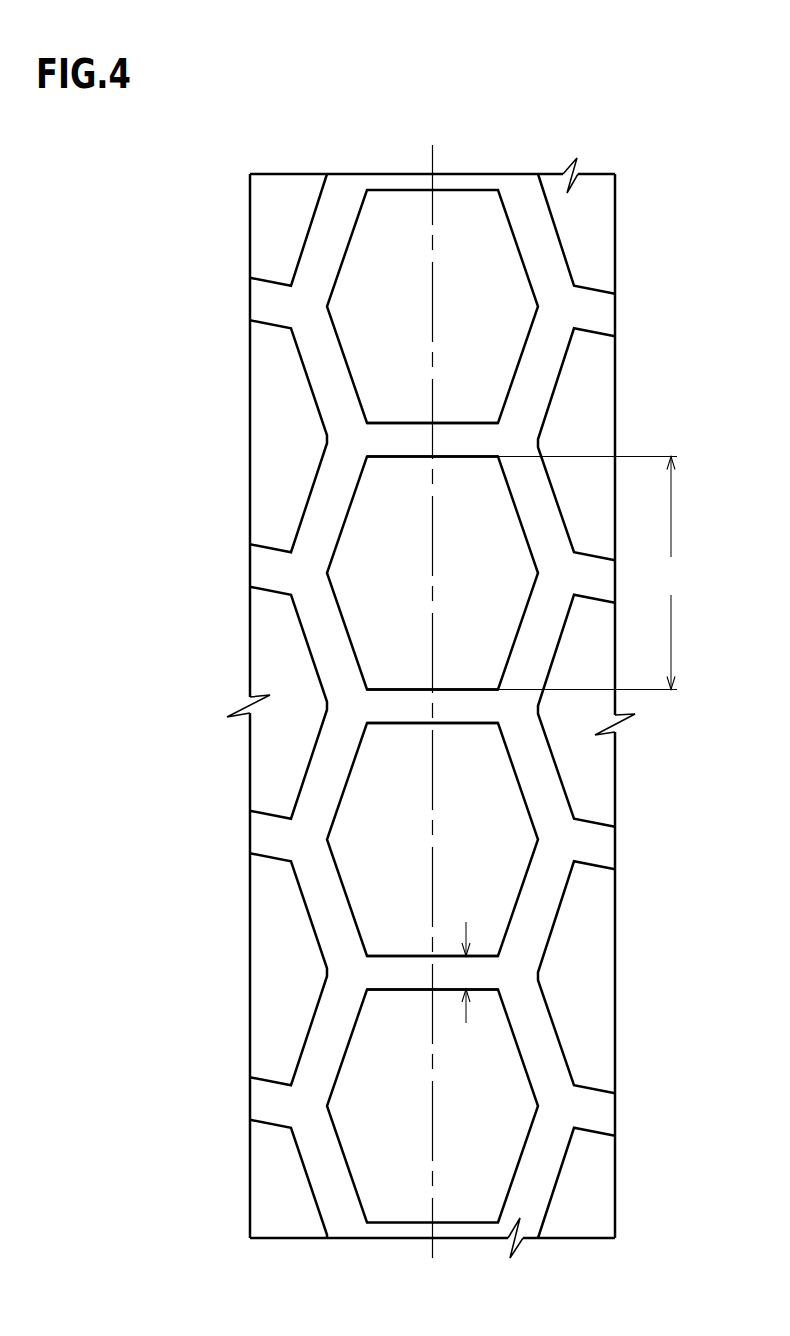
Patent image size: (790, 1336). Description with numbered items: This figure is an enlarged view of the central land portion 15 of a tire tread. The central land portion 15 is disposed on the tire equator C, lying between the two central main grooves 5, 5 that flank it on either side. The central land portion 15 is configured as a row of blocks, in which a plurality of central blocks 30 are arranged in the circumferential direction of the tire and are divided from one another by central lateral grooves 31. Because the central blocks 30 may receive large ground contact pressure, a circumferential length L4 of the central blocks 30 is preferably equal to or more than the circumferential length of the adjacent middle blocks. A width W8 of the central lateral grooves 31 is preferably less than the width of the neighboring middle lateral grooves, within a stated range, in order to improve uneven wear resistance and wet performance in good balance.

The central main groove 5 is at (333, 220).
The central land portion 15 is at (397, 240).
The central block 30 is at (405, 315).
The central lateral groove 31 is at (462, 442).
The tire equator C is at (433, 686).
The circumferential length of the central blocks L4 is at (592, 573).
The width of the central lateral grooves W8 is at (466, 971).